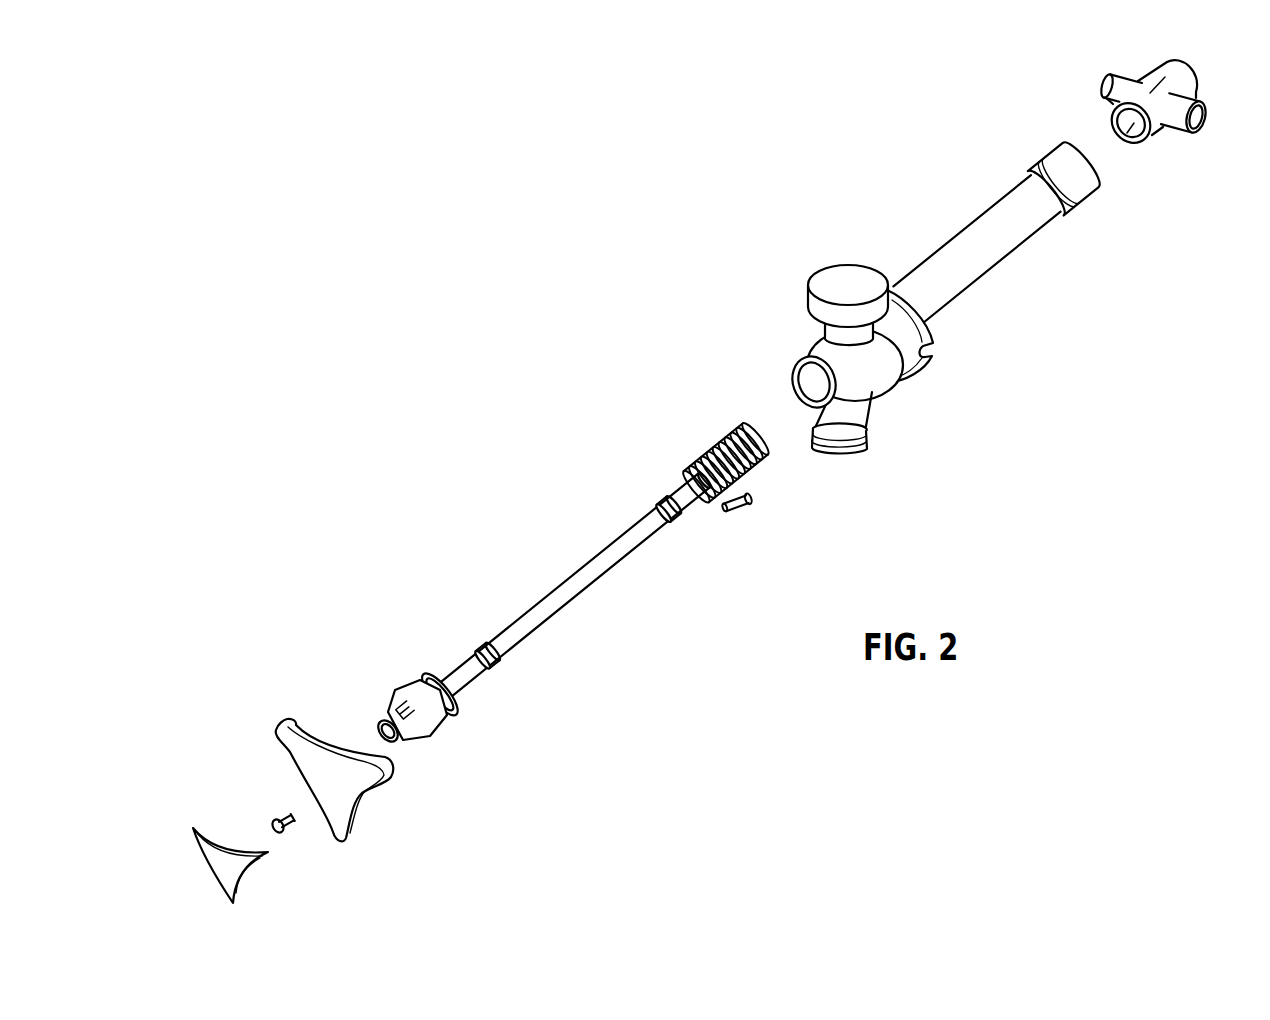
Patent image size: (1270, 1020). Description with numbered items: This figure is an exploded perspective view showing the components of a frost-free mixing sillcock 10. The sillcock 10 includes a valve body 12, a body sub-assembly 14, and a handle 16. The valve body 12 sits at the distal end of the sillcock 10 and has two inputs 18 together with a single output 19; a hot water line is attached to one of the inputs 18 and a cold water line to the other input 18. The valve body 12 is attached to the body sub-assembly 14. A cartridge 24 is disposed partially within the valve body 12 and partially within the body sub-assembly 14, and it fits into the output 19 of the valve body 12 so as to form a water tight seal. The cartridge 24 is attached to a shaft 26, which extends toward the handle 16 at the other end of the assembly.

The frost-free mixing sillcock 10 is at (907, 409).
The valve body 12 is at (1179, 94).
The body sub-assembly 14 is at (997, 232).
The handle 16 is at (277, 805).
The inputs 18 is at (1154, 109).
The output 19 is at (1132, 153).
The cartridge 24 is at (744, 466).
The shaft 26 is at (570, 589).